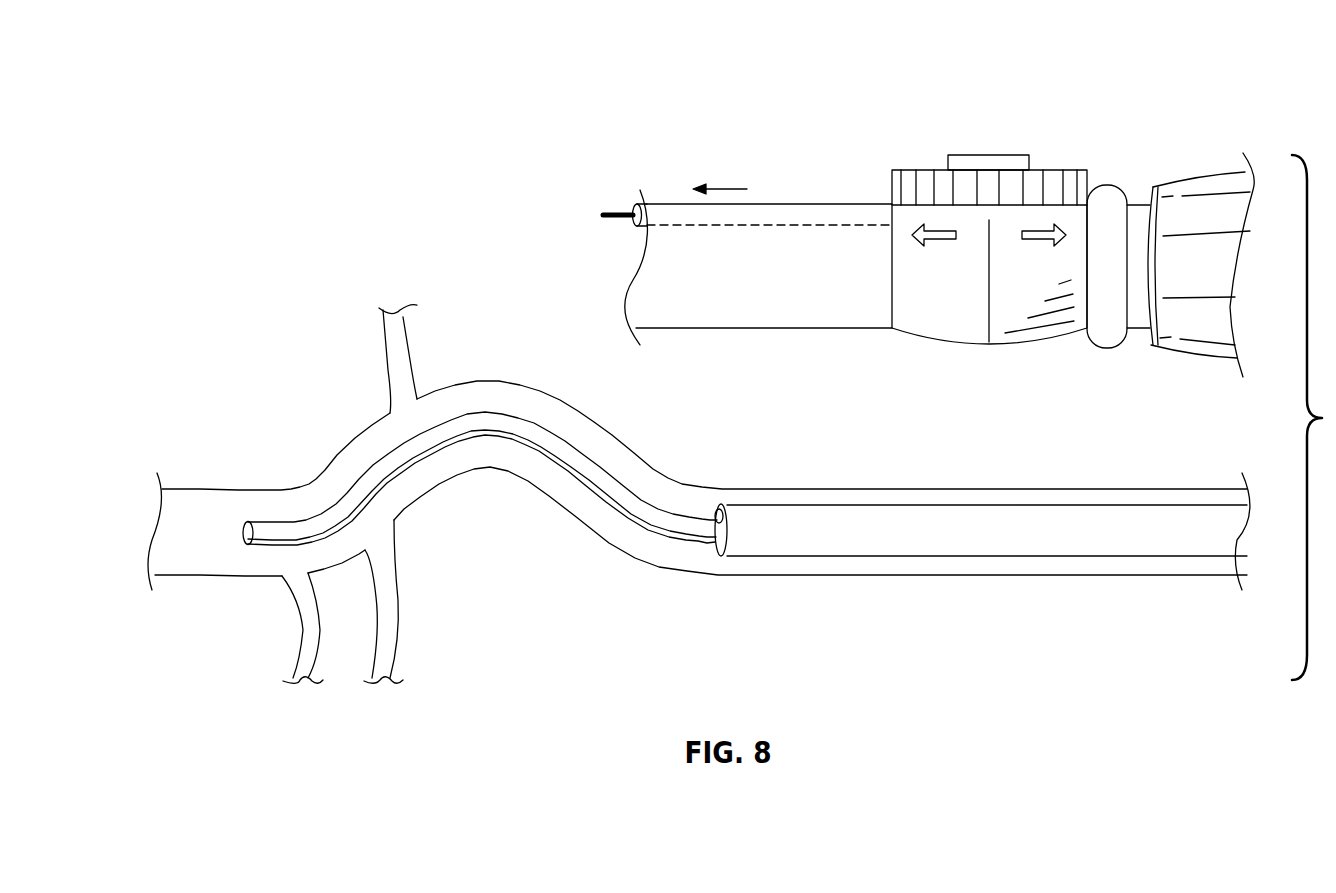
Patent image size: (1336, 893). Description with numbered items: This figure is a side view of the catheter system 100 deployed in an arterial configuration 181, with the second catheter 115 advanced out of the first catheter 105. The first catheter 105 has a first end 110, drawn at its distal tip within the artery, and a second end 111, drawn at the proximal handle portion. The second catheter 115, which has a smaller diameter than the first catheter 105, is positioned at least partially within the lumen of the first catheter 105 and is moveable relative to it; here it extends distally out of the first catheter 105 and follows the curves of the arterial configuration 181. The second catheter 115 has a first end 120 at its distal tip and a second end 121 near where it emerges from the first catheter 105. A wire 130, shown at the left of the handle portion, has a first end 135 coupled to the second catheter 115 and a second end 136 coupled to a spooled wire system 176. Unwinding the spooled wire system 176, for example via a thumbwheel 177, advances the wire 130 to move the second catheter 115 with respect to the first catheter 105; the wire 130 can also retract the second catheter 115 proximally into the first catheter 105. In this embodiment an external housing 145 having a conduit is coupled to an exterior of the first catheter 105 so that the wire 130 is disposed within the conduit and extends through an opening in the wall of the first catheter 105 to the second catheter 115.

The catheter system 100 is at (542, 83).
The first catheter 105 is at (762, 328).
The first end 110 is at (725, 578).
The second end 111 is at (889, 354).
The second catheter 115 is at (380, 457).
The first end 120 is at (245, 565).
The second end 121 is at (691, 565).
The wire 130 is at (615, 212).
The first end 135 is at (723, 507).
The second end 136 is at (1208, 207).
The external housing 145 is at (777, 213).
The spooled wire system 176 is at (1169, 178).
The thumbwheel 177 is at (988, 155).
The arterial configuration 181 is at (313, 470).